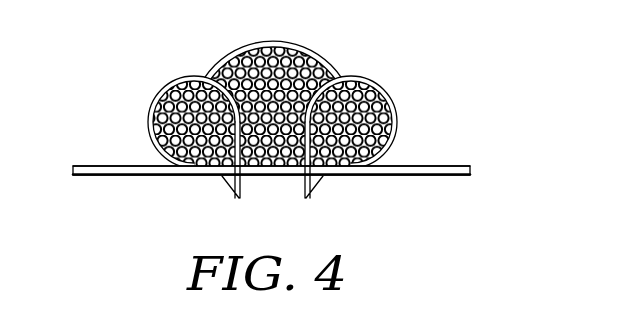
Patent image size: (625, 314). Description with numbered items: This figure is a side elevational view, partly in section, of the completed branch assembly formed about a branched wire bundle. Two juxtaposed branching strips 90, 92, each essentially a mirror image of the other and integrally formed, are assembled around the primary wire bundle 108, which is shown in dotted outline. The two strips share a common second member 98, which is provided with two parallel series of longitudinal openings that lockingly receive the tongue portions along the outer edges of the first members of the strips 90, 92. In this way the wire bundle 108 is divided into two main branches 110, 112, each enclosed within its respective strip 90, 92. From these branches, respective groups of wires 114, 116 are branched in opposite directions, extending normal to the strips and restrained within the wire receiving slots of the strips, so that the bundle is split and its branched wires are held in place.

The branching strip 90 is at (279, 85).
The branching strip 92 is at (154, 109).
The common second member 98 is at (288, 175).
The wire bundle 108 is at (295, 61).
The main branch 110 is at (362, 78).
The main branch 112 is at (173, 129).
The group of wires 114 is at (470, 177).
The group of wires 116 is at (115, 181).